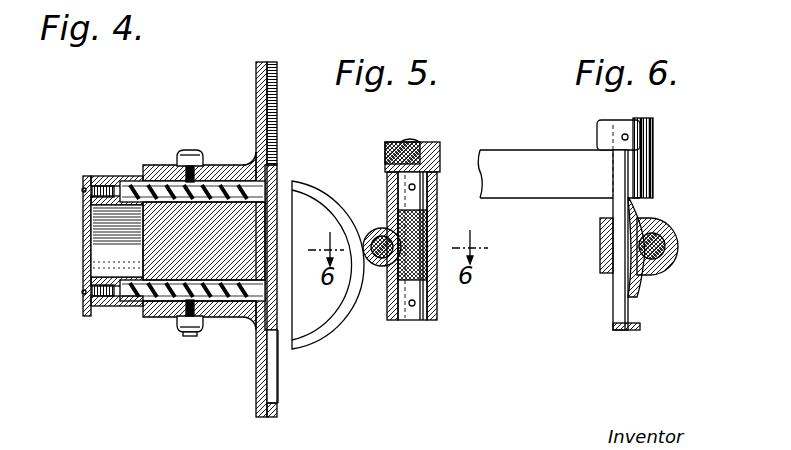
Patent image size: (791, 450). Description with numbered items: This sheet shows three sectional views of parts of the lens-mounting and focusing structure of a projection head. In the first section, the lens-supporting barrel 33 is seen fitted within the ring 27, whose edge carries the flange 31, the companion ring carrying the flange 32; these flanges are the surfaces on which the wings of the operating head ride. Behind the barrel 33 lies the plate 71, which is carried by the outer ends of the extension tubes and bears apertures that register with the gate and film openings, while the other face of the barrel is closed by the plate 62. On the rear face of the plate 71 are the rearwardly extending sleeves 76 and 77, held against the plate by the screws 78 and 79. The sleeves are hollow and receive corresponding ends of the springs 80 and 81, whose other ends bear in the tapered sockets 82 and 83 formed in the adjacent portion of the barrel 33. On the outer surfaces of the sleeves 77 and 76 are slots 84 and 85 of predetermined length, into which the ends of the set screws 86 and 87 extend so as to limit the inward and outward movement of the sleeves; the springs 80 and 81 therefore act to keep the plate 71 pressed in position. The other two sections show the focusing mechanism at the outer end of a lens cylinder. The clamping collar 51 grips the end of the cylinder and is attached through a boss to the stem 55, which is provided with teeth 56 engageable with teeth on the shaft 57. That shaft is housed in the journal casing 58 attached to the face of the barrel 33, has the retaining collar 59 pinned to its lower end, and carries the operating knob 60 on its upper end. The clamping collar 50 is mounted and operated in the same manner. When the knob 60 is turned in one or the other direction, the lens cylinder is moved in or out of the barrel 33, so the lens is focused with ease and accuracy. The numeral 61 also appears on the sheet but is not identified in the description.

In FIG. 4, the ring 27 is at (267, 61).
In FIG. 4, the plate 62 is at (256, 101).
In FIG. 4, the tapered socket 82 is at (275, 181).
In FIG. 4, the set screw 86 is at (253, 163).
In FIG. 4, the sleeve 77 is at (113, 177).
In FIG. 4, the screw 78 is at (83, 190).
In FIG. 4, the screw 79 is at (83, 292).
In FIG. 4, the plate 71 is at (83, 237).
In FIG. 4, the spring 80 is at (124, 179).
In FIG. 4, the sleeve 76 is at (110, 282).
In FIG. 4, the slot 84 is at (185, 151).
In FIG. 4, the tapered socket 83 is at (258, 323).
In FIG. 4, the spring 81 is at (145, 313).
In FIG. 4, the slot 85 is at (158, 318).
In FIG. 4, the set screw 87 is at (200, 336).
In FIG. 4, the barrel 33 is at (290, 312).
In FIG. 5, the clamping collar 51 is at (333, 193).
In FIG. 5, the operating knob 60 is at (440, 146).
In FIG. 5, the stem 55 is at (391, 228).
In FIG. 6, the stem 55 is at (612, 302).
In FIG. 5, the journal casing 58 is at (440, 222).
In FIG. 6, the journal casing 58 is at (650, 273).
In FIG. 5, the retaining collar 59 is at (440, 302).
In FIG. 5, the element 61 is at (356, 16).
In FIG. 5, the flange 31 is at (423, 15).
In FIG. 5, the flange 32 is at (445, 6).
In FIG. 6, the clamping collar 50 is at (530, 160).
In FIG. 6, the teeth 56 is at (642, 212).
In FIG. 6, the shaft 57 is at (679, 243).